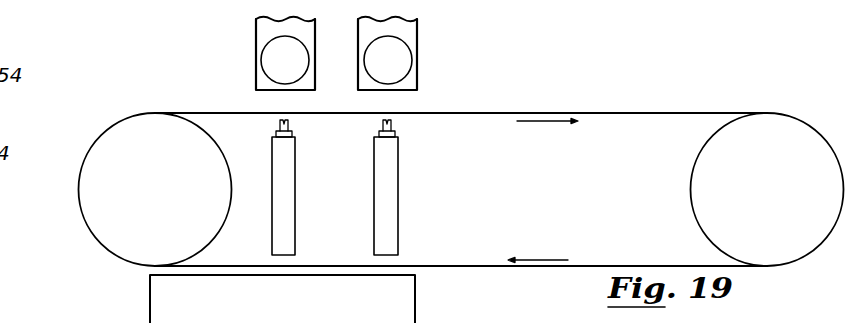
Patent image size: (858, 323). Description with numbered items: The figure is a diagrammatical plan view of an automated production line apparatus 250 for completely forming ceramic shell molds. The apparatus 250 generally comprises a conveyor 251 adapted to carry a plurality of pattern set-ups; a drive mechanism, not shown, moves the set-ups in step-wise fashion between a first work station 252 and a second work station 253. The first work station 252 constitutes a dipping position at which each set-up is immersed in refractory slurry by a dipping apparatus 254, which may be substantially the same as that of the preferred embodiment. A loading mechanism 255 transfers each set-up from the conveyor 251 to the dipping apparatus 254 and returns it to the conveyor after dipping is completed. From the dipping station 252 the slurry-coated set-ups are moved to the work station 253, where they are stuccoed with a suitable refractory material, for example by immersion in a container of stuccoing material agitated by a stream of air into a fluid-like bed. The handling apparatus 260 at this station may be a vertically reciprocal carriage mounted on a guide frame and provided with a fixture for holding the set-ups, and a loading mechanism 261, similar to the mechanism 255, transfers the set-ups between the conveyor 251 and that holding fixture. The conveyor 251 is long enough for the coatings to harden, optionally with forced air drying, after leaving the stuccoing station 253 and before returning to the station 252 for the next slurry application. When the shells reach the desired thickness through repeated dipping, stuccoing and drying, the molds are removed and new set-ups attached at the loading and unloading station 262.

The apparatus 250 is at (681, 112).
The conveyor 251 is at (568, 112).
The first work station 252 is at (267, 108).
The work station 253 is at (420, 107).
The dipping apparatus 254 is at (248, 62).
The loading mechanism 255 is at (298, 197).
The stuccoing apparatus 260 is at (422, 58).
The loading mechanism 261 is at (402, 215).
The loading and unloading station 262 is at (415, 303).